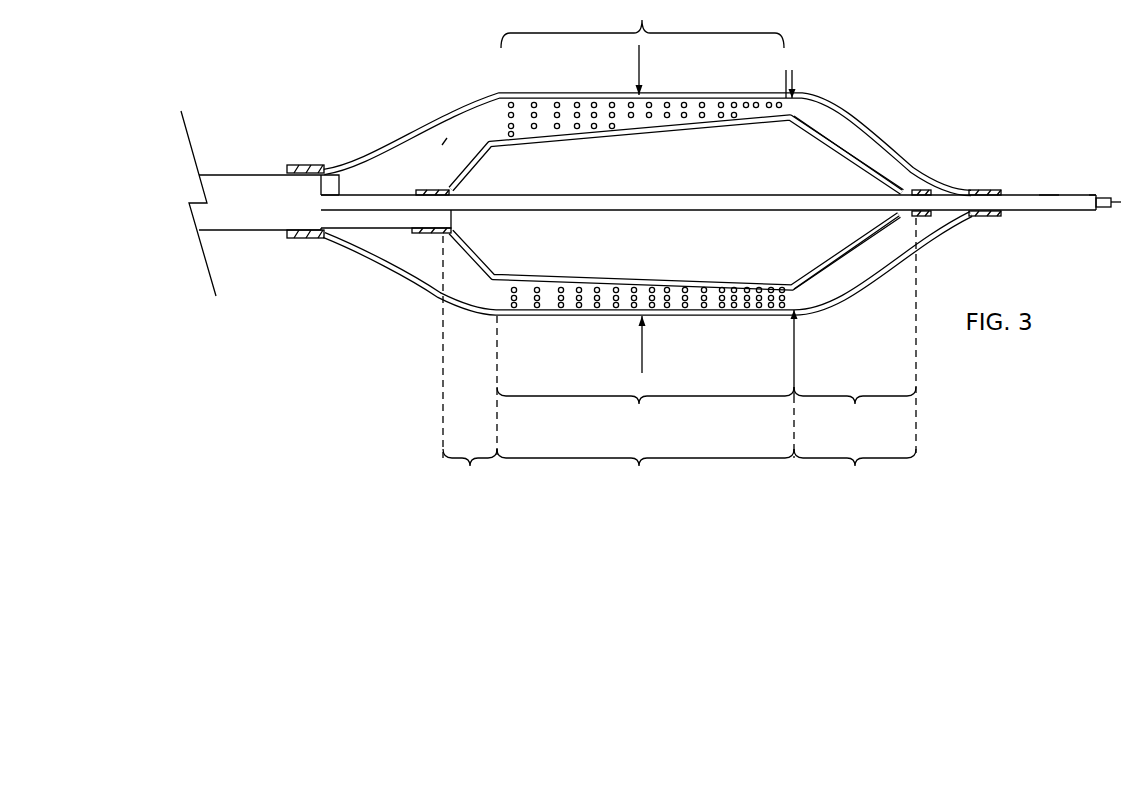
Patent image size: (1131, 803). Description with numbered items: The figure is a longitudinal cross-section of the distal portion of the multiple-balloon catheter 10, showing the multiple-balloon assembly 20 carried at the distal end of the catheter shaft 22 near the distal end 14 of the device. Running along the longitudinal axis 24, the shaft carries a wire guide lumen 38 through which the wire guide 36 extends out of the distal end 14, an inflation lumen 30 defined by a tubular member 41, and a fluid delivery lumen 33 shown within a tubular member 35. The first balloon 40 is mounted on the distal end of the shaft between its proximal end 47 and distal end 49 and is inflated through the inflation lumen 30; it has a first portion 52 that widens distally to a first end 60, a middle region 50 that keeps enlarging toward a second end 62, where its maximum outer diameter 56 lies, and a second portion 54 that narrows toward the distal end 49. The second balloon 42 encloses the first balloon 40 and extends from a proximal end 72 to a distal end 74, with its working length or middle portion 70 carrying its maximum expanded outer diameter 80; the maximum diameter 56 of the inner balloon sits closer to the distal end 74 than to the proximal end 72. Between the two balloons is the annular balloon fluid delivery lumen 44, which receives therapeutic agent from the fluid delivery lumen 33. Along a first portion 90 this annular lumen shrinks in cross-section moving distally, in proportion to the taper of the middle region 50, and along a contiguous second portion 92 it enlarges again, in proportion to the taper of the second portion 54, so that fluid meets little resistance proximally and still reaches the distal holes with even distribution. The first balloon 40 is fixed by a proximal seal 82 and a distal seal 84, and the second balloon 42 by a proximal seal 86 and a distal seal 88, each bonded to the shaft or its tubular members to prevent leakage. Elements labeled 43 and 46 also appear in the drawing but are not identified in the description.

The multiple-balloon catheter 10 is at (403, 70).
The distal end 14 is at (1093, 215).
The multiple-balloon assembly 20 is at (407, 307).
The catheter shaft 22 is at (250, 179).
The longitudinal axis 24 is at (1111, 199).
The inflation lumen 30 is at (391, 220).
The fluid delivery lumen 33 is at (354, 160).
The tubular member 35 is at (341, 180).
The wire guide 36 is at (1093, 197).
The wire guide lumen 38 is at (664, 200).
The first balloon 40 is at (833, 142).
The tubular member 41 is at (360, 220).
The second balloon 42 is at (601, 96).
The distal shaft portion 43 is at (1057, 200).
The annular balloon fluid delivery lumen 44 is at (443, 147).
The holes 46 is at (757, 317).
The proximal end 47 is at (413, 235).
The distal end 49 is at (930, 218).
The middle region 50 is at (645, 443).
The first portion 52 is at (470, 363).
The second portion 54 is at (855, 470).
The maximum outer diameter 56 is at (790, 340).
The first end 60 is at (475, 302).
The second end 62 is at (800, 300).
The middle portion 70 is at (648, 53).
The proximal end 72 is at (288, 240).
The distal end 74 is at (1005, 216).
The maximum expanded outer diameter 80 is at (643, 350).
The proximal seal 82 is at (427, 189).
The distal seal 84 is at (921, 192).
The proximal seal 86 is at (318, 168).
The distal seal 88 is at (993, 190).
The first portion 90 is at (645, 387).
The second portion 92 is at (855, 338).